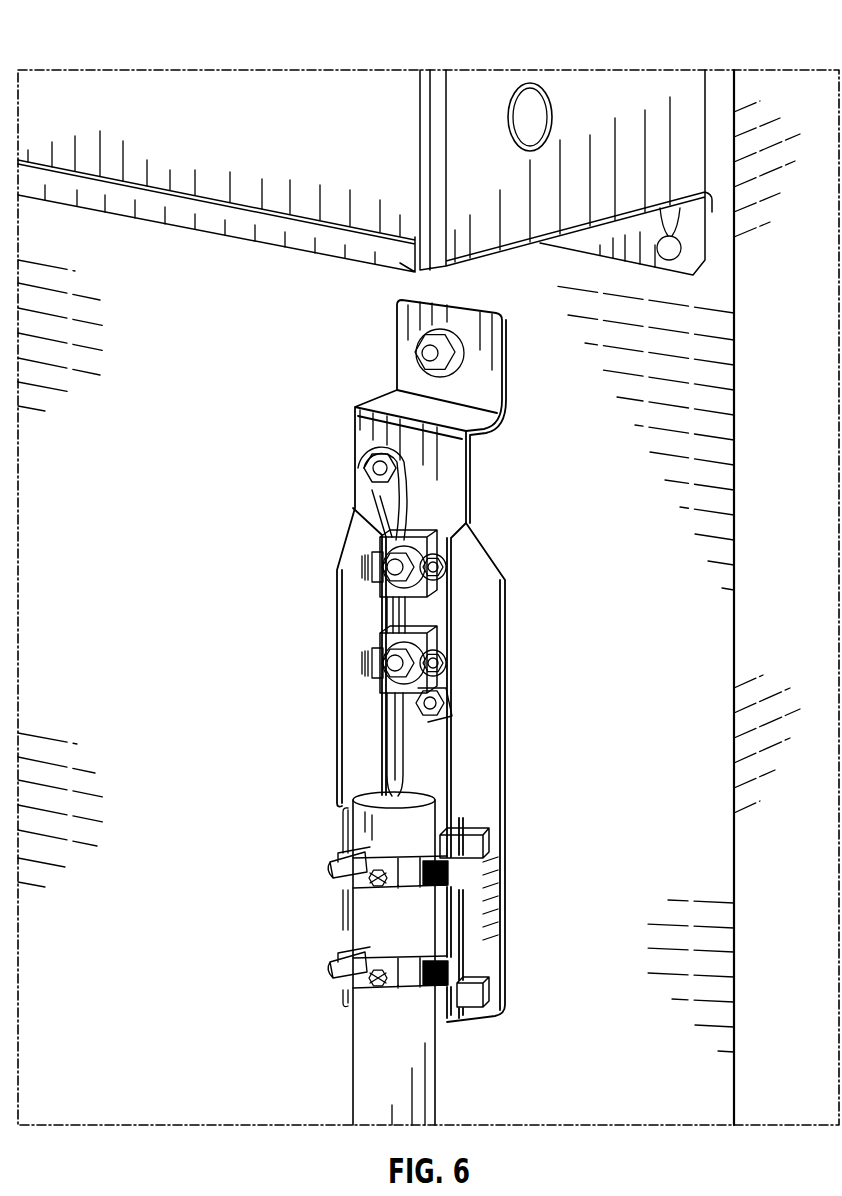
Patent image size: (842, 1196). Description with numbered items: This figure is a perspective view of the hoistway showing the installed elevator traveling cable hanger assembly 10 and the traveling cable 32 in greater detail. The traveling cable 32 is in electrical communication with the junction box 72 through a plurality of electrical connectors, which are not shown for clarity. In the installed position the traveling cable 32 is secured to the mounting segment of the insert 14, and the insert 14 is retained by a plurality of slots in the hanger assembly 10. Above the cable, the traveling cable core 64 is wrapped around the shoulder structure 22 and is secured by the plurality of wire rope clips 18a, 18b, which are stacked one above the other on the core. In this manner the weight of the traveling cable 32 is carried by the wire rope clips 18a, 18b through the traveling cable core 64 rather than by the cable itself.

The hanger assembly 10 is at (467, 750).
The insert 14 is at (467, 1002).
The wire rope clip 18a is at (445, 567).
The wire rope clip 18b is at (446, 663).
The shoulder structure 22 is at (412, 475).
The traveling cable 32 is at (427, 1077).
The traveling cable core 64 is at (405, 615).
The junction box 72 is at (478, 98).